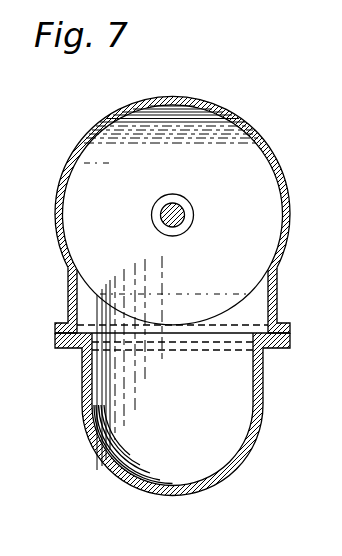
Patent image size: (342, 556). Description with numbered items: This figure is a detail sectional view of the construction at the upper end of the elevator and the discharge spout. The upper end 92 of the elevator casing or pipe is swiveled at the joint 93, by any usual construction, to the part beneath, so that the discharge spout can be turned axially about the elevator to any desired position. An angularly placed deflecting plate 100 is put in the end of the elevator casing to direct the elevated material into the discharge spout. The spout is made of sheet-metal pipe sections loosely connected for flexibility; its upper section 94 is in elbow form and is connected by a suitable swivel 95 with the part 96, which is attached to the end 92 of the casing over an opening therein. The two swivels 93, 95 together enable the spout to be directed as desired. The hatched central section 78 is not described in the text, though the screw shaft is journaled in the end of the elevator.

The shaft 78 is at (194, 214).
The spherical shell 92 is at (261, 138).
The cup assembly 93 is at (198, 295).
The cylindrical skirt 94 is at (85, 431).
The flange plate 95 is at (58, 338).
The cylindrical wall 96 is at (68, 300).
The inner spherical surface 100 is at (264, 201).